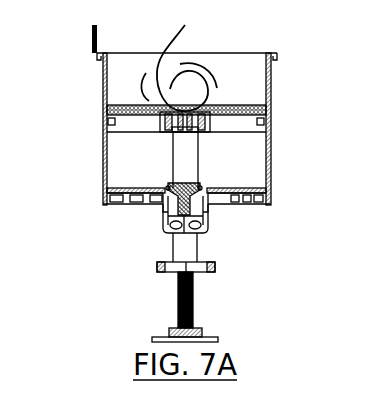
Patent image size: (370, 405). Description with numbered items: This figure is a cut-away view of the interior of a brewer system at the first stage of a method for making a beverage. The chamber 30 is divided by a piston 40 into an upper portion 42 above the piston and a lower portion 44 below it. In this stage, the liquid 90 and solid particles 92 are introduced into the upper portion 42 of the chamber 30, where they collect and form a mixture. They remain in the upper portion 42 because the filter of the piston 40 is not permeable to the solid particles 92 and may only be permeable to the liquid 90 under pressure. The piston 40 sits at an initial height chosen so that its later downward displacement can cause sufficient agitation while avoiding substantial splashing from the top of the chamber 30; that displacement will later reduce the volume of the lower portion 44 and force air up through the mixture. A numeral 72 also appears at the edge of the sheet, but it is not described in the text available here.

The chamber 30 is at (103, 88).
The piston 40 is at (123, 123).
The upper portion 42 is at (253, 90).
The lower portion 44 is at (252, 173).
The liquid 90 is at (167, 42).
The solid particles 92 is at (267, 100).
The adjacent figure numeral 72 is at (338, 398).